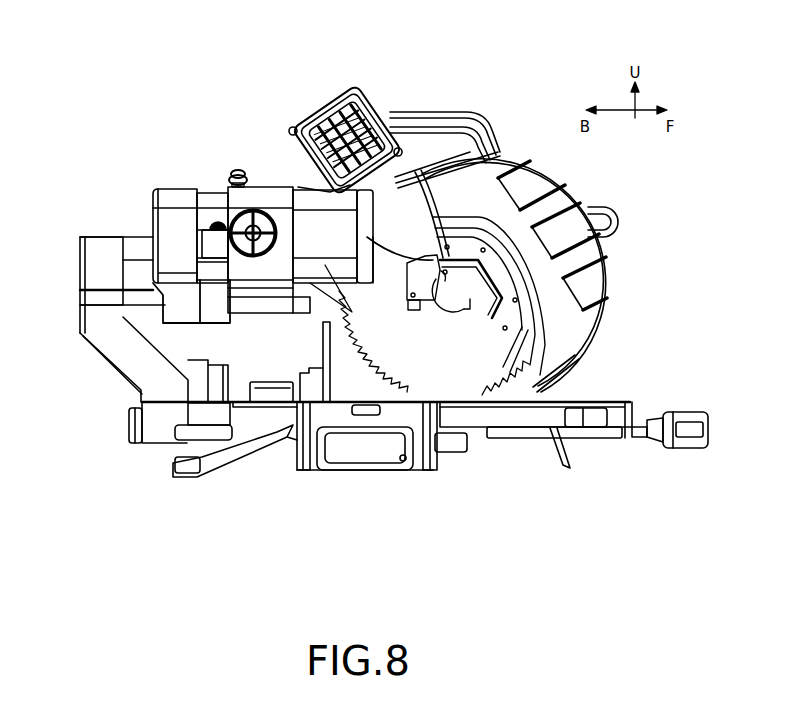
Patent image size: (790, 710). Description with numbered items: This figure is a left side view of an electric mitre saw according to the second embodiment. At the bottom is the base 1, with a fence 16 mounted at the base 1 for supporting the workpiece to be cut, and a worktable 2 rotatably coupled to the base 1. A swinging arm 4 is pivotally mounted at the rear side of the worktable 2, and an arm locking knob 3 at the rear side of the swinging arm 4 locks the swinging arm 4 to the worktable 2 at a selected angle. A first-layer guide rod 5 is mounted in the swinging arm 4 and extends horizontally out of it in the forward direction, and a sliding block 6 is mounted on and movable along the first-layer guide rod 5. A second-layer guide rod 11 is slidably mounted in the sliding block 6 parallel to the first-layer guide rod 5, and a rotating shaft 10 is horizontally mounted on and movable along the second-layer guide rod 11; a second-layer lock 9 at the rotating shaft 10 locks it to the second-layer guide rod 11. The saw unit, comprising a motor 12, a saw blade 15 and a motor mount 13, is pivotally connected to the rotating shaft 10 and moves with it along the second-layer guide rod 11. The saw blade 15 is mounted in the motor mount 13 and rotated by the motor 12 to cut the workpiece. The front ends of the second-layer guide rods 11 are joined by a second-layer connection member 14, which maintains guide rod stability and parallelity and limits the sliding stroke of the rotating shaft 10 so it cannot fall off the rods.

The base 1 is at (360, 447).
The worktable 2 is at (473, 418).
The arm locking knob 3 is at (125, 418).
The swinging arm 4 is at (123, 343).
The first-layer guide rod 5 is at (138, 247).
The sliding block 6 is at (172, 247).
The second-layer lock 9 is at (238, 170).
The rotating shaft 10 is at (290, 213).
The second-layer guide rod 11 is at (212, 202).
The motor 12 is at (327, 105).
The motor mount 13 is at (393, 212).
The second-layer connection member 14 is at (425, 250).
The saw blade 15 is at (427, 353).
The fence 16 is at (322, 340).